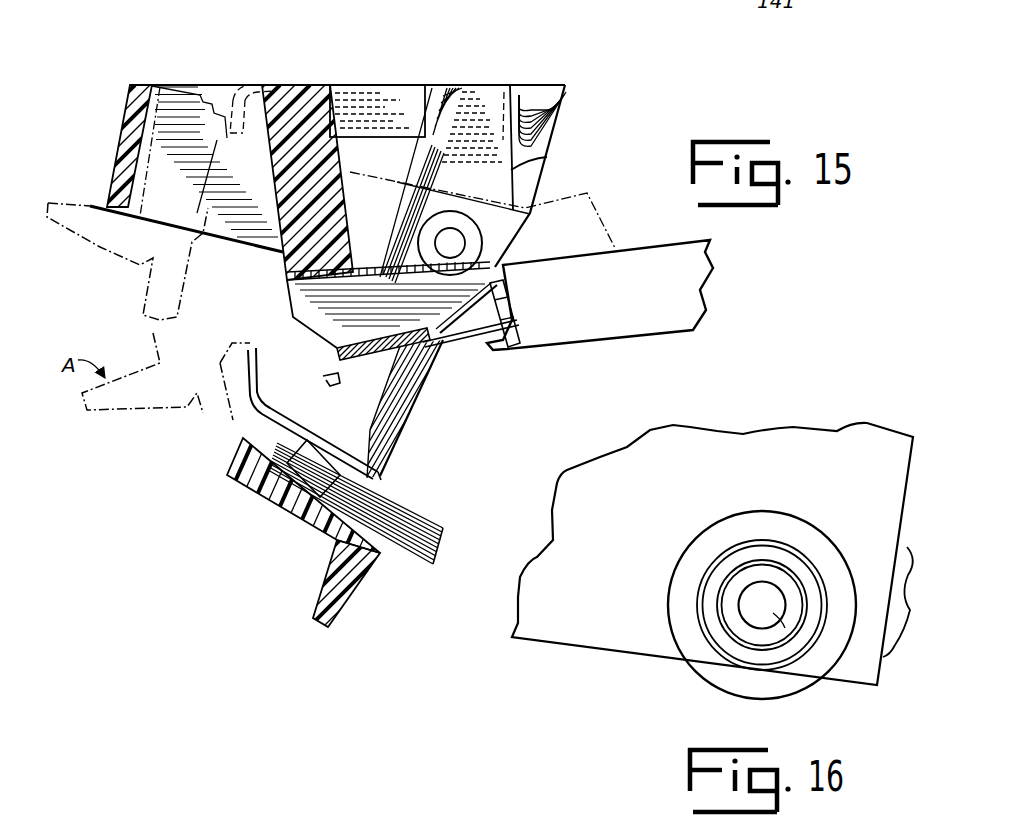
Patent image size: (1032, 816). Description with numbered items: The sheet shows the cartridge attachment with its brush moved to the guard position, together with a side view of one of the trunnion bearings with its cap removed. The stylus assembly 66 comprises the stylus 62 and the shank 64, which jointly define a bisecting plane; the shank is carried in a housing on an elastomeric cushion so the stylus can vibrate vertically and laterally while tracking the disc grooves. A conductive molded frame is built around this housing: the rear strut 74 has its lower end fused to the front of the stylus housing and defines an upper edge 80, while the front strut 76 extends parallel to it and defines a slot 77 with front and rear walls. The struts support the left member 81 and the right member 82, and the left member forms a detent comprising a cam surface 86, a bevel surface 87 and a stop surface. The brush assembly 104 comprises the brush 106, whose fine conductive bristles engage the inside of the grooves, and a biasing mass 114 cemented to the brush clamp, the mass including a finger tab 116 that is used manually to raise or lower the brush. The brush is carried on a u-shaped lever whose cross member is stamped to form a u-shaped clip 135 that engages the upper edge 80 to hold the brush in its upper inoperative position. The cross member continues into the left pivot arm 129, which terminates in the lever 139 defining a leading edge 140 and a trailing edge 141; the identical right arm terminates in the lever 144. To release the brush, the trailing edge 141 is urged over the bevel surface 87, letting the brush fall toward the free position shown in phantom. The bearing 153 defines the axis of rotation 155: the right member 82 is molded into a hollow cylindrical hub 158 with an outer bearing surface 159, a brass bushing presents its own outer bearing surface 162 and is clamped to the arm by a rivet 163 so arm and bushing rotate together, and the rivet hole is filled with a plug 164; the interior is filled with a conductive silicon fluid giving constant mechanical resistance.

In FIG. 15, the front strut 76 is at (143, 84).
In FIG. 15, the slot 77 is at (214, 70).
In FIG. 15, the upper edge 80 is at (216, 162).
In FIG. 15, the left member 81 is at (390, 82).
In FIG. 15, the rear strut 74 is at (310, 84).
In FIG. 15, the u-shaped clip 135 is at (280, 82).
In FIG. 15, the lever 139 is at (465, 84).
In FIG. 15, the leading edge 140 is at (435, 138).
In FIG. 15, the bevel surface 87 is at (513, 90).
In FIG. 15, the cam surface 86 is at (558, 113).
In FIG. 15, the trailing edge 141 is at (548, 157).
In FIG. 15, the stylus assembly 66 is at (675, 335).
In FIG. 15, the stylus 62 is at (320, 386).
In FIG. 15, the shank 64 is at (470, 338).
In FIG. 15, the left pivot arm 129 is at (420, 410).
In FIG. 15, the brush assembly 104 is at (398, 485).
In FIG. 15, the brush 106 is at (450, 533).
In FIG. 15, the biasing mass 114 is at (265, 502).
In FIG. 15, the finger tab 116 is at (313, 627).
In FIG. 16, the right member 82 is at (833, 427).
In FIG. 16, the lever 144 is at (883, 658).
In FIG. 16, the bearing 153 is at (722, 505).
In FIG. 16, the axis of rotation 155 is at (763, 602).
In FIG. 16, the hollow cylindrical hub 158 is at (713, 653).
In FIG. 16, the outer bearing surface 159 is at (732, 657).
In FIG. 16, the outer bearing surface 162 is at (743, 647).
In FIG. 16, the rivet 163 is at (777, 650).
In FIG. 16, the plug 164 is at (773, 614).